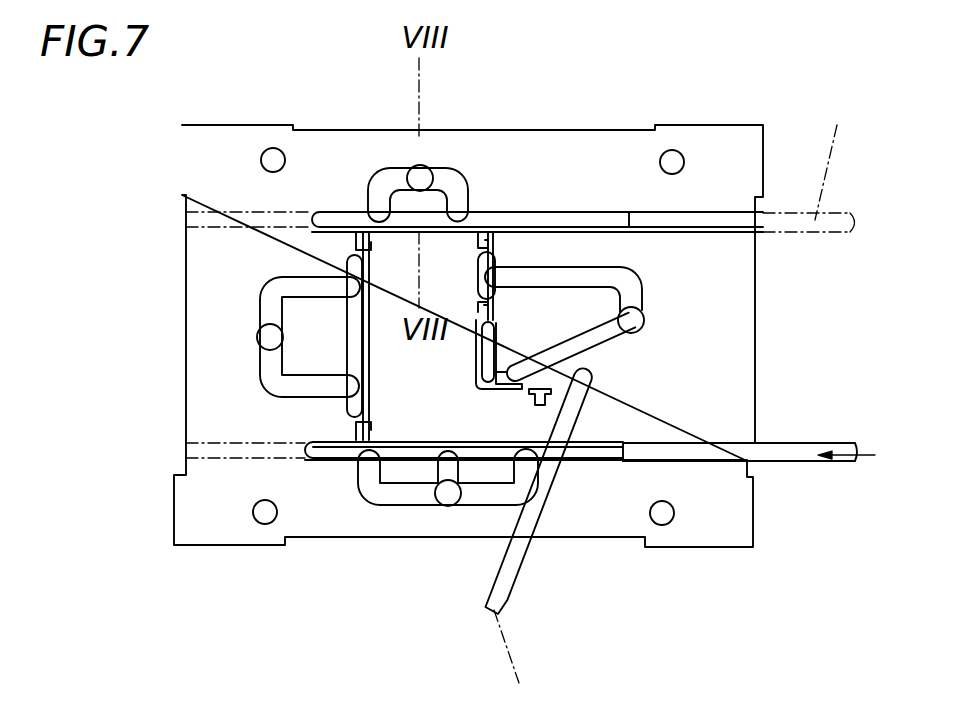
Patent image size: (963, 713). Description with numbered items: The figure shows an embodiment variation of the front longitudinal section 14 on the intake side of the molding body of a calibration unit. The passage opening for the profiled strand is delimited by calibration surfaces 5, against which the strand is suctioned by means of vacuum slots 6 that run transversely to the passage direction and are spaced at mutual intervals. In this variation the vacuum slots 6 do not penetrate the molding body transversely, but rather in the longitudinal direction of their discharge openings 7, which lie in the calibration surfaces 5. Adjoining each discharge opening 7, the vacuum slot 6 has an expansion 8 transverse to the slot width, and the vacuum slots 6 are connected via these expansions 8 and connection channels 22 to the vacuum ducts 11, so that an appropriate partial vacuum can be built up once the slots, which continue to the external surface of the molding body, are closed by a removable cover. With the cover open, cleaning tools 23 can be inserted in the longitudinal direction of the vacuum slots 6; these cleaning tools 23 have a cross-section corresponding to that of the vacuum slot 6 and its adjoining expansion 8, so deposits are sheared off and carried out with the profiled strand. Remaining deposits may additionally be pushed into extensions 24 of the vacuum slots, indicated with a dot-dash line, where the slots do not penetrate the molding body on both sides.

The calibration surfaces 5 is at (367, 352).
The vacuum slots 6 is at (366, 228).
The discharge openings 7 is at (458, 241).
The expansion 8 is at (442, 218).
The vacuum ducts 11 is at (420, 177).
The front longitudinal section 14 is at (599, 121).
The connection channels 22 is at (393, 177).
The cleaning tools 23 is at (722, 635).
The extensions 24 is at (325, 220).